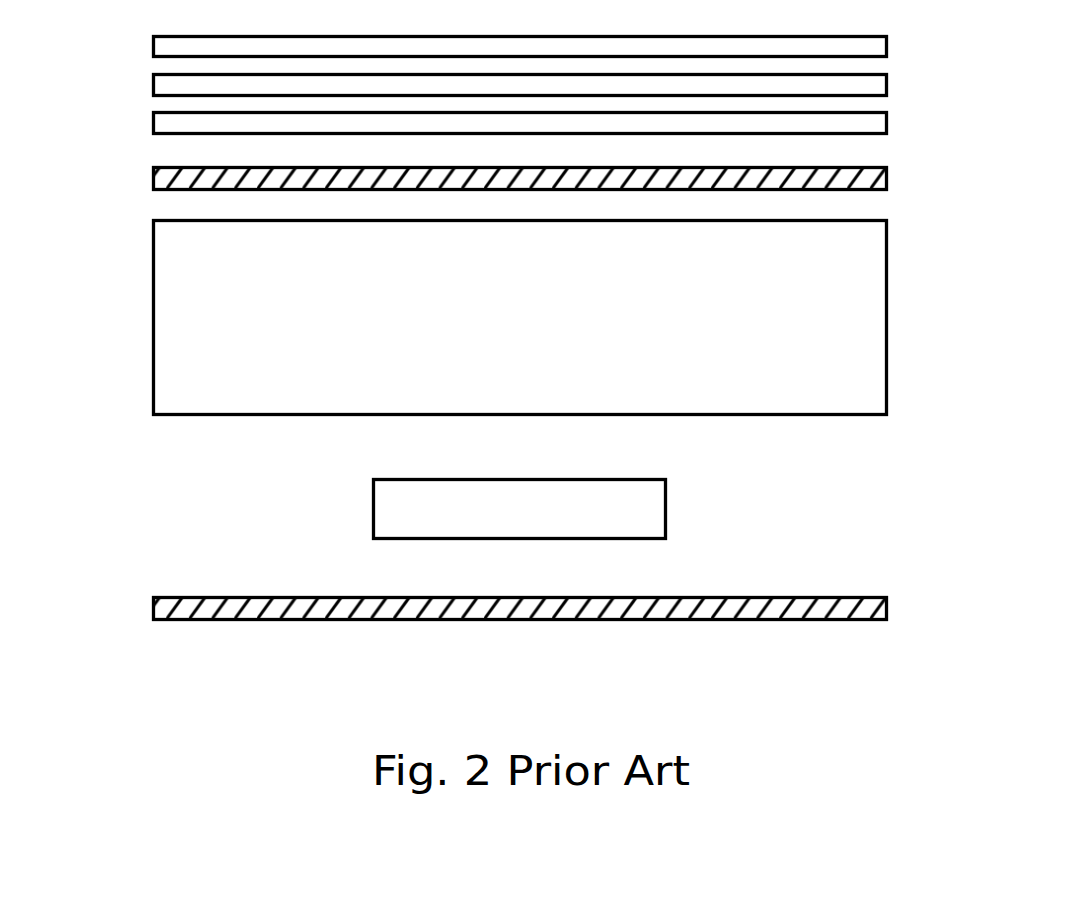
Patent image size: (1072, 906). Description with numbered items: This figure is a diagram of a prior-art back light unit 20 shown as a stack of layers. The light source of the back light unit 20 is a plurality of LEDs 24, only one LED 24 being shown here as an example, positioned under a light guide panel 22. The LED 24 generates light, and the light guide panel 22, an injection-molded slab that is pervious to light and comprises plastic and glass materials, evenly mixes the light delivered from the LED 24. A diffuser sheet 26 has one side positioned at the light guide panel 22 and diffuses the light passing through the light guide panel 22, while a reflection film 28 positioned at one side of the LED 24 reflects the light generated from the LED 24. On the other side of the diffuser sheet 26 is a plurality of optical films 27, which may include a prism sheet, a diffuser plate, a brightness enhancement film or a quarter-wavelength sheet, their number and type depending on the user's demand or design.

The back light unit 20 is at (556, 331).
The light guide panel 22 is at (888, 320).
The LED 24 is at (668, 512).
The diffuser sheet 26 is at (888, 180).
The optical films 27 is at (138, 35).
The reflection film 28 is at (554, 613).